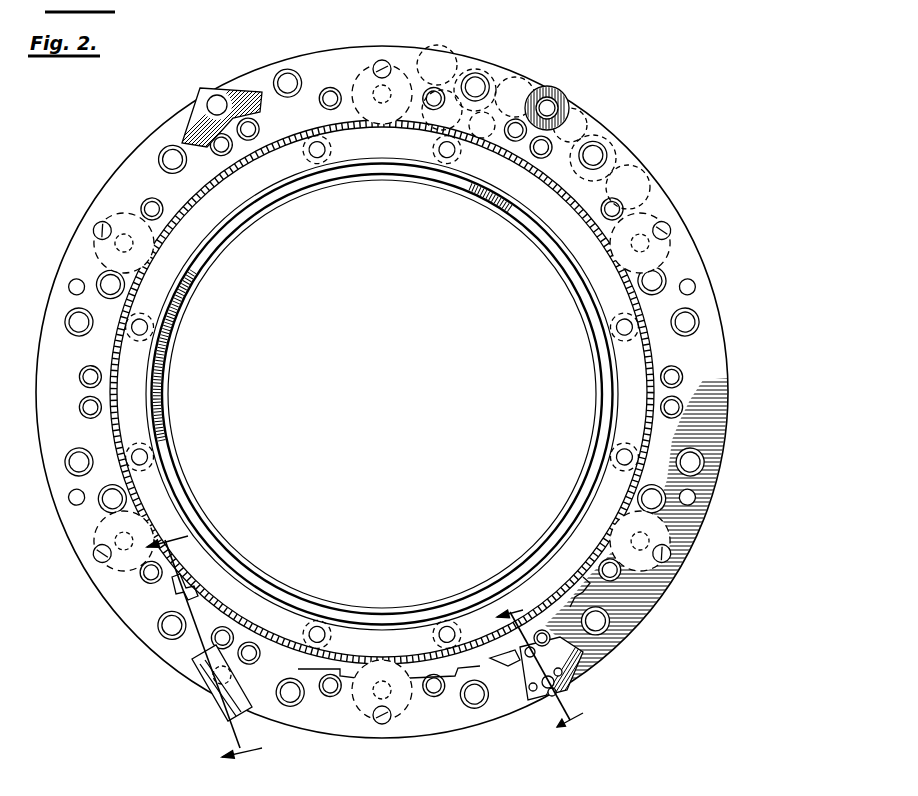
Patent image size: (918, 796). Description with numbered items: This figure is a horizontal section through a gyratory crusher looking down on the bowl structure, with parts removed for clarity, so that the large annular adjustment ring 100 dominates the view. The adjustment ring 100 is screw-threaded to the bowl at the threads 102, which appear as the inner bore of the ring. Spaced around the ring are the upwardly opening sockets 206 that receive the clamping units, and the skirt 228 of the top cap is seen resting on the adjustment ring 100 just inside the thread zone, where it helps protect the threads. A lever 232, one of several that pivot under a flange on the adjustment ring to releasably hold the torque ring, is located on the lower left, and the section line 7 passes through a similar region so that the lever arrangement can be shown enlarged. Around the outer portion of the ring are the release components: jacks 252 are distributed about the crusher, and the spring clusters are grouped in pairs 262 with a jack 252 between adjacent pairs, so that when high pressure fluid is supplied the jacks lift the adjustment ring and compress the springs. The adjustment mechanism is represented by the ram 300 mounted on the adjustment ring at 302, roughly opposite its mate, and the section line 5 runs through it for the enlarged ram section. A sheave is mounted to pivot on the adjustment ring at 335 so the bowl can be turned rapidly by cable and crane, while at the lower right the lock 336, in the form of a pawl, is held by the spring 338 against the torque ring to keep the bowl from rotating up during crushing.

The adjustment ring 100 is at (713, 358).
The screw threads 102 is at (590, 272).
The upwardly opening socket 206 is at (603, 328).
The skirt 228 is at (650, 410).
The lever 232 is at (178, 597).
The jack 252 is at (402, 62).
The pair of spring clusters 262 is at (455, 62).
The ram 300 is at (203, 667).
The ram mounting 302 is at (550, 102).
The sheave mounting 335 is at (212, 108).
The lock 336 is at (515, 658).
The spring 338 is at (553, 677).
The section line 5- 5 is at (211, 651).
The section line 7- 7 is at (550, 662).